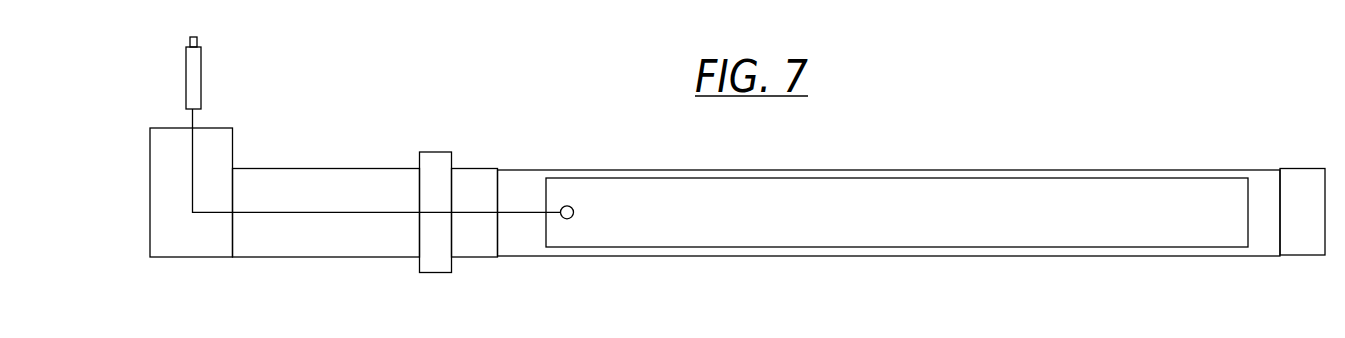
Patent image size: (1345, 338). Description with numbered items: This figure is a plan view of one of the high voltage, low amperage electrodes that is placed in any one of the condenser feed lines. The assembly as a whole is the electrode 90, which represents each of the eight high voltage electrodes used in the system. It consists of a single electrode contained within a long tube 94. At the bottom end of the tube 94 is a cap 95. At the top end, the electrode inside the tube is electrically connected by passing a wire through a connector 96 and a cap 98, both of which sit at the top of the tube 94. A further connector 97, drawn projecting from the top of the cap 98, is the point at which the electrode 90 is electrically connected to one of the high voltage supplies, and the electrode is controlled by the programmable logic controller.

The electrode 90 is at (992, 108).
The tube 94 is at (520, 173).
The cap 95 is at (1299, 173).
The connector 96 is at (435, 158).
The connector 97 is at (195, 62).
The cap 98 is at (189, 250).